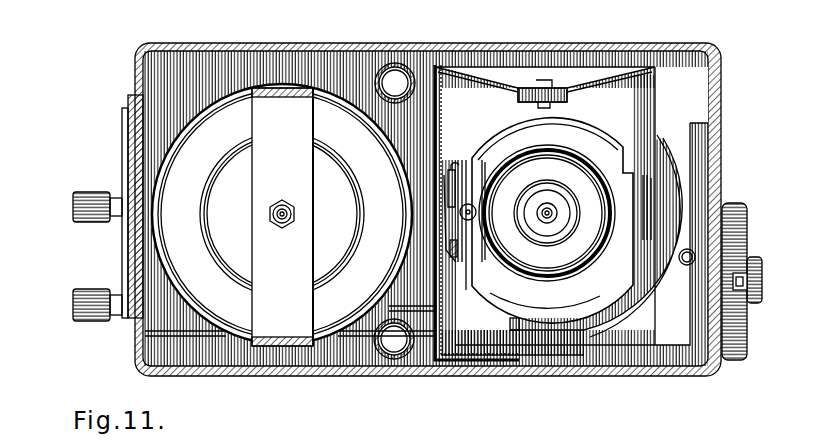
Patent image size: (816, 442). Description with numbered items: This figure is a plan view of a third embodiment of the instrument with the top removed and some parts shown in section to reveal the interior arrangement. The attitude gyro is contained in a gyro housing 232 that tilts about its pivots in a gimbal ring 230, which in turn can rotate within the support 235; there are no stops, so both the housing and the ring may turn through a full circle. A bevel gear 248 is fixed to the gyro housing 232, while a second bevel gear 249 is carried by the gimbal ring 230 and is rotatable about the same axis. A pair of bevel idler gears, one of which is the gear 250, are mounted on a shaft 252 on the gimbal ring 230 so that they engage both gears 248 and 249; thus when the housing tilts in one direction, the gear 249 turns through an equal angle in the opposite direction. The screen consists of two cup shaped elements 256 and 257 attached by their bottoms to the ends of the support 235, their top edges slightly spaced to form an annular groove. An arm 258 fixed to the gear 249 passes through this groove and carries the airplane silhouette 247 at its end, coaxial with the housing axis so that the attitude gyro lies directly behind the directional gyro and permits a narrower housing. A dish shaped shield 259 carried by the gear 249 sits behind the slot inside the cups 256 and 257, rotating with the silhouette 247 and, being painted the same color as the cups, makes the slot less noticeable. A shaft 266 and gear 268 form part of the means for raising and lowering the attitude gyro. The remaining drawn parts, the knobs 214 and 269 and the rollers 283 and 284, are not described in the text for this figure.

The adjusting knob 214 is at (73, 207).
The adjusting knob 269 is at (73, 300).
The guide roller 283 is at (395, 83).
The guide roller 284 is at (394, 339).
The airplane silhouette 247 is at (428, 223).
The bevel gear 249 is at (463, 165).
The bevel gear 248 is at (558, 220).
The arm 258 is at (450, 187).
The bevel idler gear 250 is at (477, 213).
The shaft 252 is at (480, 236).
The dish shaped shield 259 is at (449, 253).
The gimbal ring 230 is at (545, 323).
The gyro housing 232 is at (605, 258).
The cup shaped element 257 is at (440, 336).
The gear 268 is at (376, 318).
The shaft 266 is at (684, 266).
The cup shaped element 256 is at (665, 78).
The support 235 is at (663, 138).